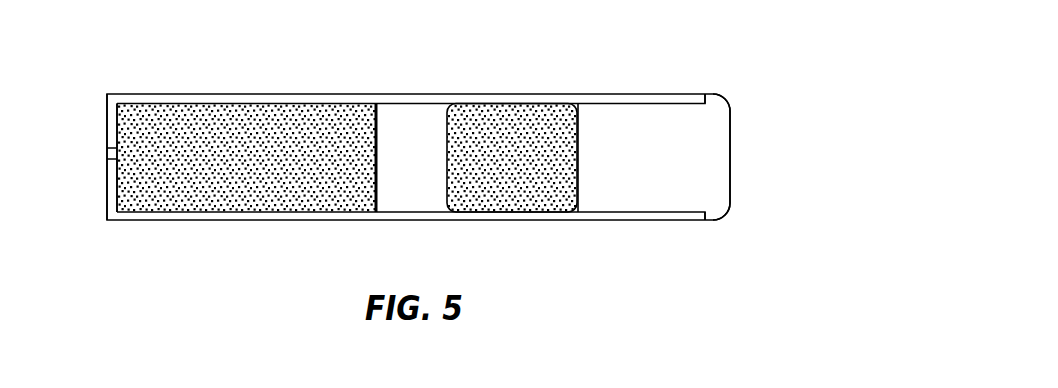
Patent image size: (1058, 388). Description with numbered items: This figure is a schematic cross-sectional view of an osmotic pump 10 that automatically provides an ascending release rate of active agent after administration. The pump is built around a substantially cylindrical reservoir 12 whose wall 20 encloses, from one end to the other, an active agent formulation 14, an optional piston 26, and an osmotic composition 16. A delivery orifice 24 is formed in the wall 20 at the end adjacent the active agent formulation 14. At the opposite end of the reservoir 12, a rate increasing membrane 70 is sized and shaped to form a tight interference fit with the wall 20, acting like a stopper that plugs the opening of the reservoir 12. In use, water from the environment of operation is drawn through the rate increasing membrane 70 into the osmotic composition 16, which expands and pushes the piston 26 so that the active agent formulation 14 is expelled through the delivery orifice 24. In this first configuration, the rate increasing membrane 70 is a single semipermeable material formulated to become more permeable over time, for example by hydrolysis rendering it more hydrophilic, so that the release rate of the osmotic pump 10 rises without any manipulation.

The osmotic pump 10 is at (665, 46).
The reservoir 12 is at (233, 100).
The active agent formulation 14 is at (204, 197).
The osmotic composition 16 is at (517, 120).
The wall 20 is at (112, 193).
The delivery orifice 24 is at (108, 155).
The piston 26 is at (405, 197).
The rate increasing membrane 70 is at (708, 183).